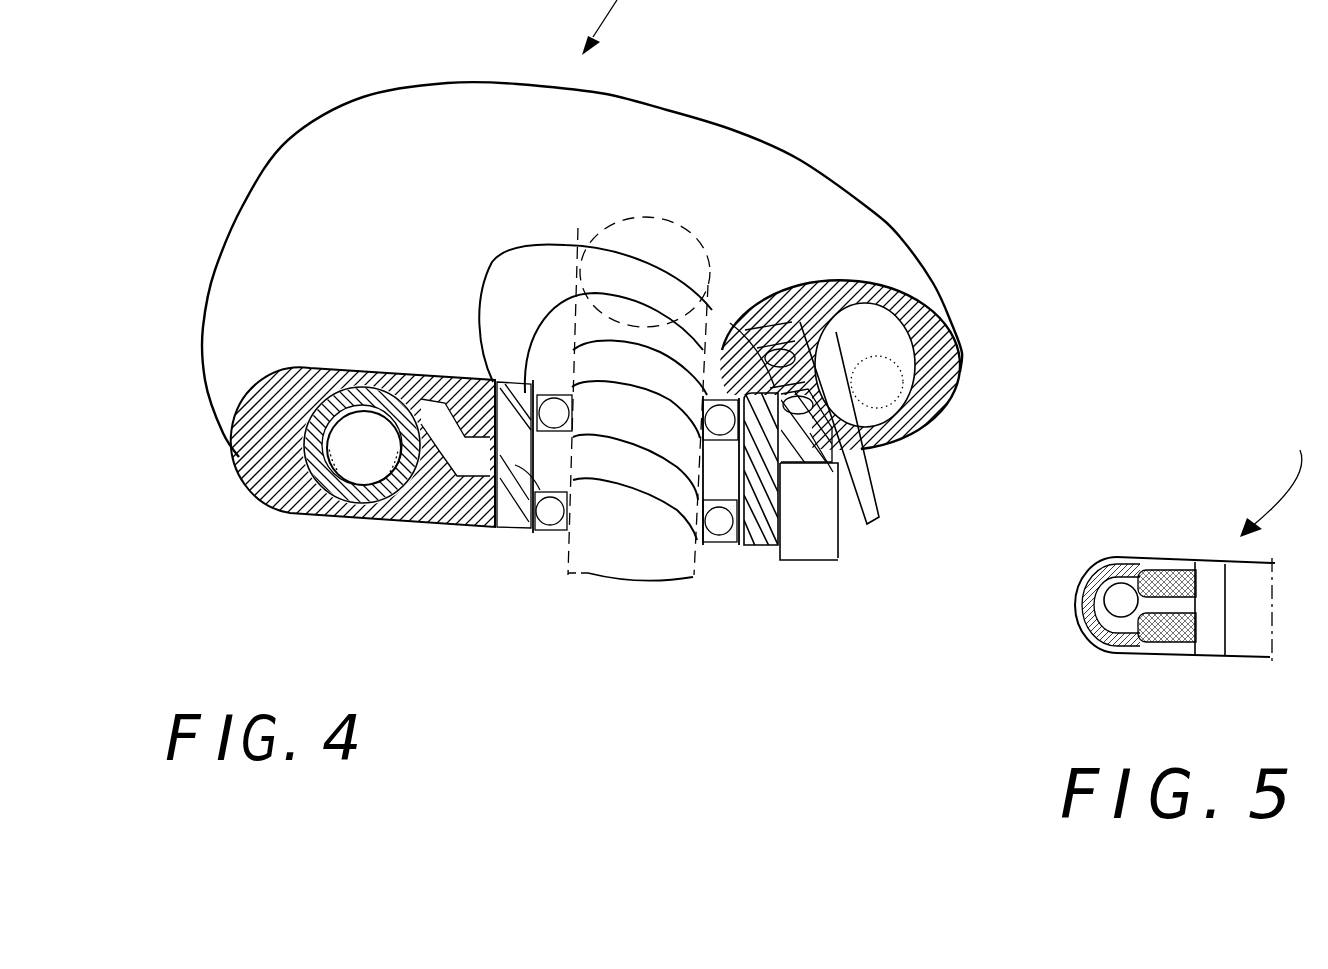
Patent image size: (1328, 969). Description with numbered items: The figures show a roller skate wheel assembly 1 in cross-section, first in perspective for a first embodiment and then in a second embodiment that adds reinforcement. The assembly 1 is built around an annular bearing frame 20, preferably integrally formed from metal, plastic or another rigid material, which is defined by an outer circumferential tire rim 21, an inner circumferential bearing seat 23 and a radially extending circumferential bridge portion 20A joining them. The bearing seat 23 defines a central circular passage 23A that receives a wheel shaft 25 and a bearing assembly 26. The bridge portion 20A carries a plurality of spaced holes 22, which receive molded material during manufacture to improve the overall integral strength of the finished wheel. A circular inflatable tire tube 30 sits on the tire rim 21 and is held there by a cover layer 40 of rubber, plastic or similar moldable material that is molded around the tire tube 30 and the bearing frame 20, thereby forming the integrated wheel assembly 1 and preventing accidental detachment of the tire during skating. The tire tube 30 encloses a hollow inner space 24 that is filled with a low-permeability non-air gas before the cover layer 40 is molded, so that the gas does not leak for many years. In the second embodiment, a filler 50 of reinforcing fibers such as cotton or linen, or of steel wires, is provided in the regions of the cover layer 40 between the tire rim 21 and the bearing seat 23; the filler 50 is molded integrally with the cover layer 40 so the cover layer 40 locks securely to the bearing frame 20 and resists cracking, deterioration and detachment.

In FIG. 5, the skate wheel assembly 1 is at (1271, 481).
In FIG. 4, the bearing frame 20 is at (750, 552).
In FIG. 4, the bridge portion 20A is at (809, 453).
In FIG. 4, the tire rim 21 is at (838, 548).
In FIG. 4, the holes 22 is at (840, 315).
In FIG. 4, the bearing seat 23 is at (573, 487).
In FIG. 4, the central circular passage 23A is at (540, 535).
In FIG. 4, the hollow inner space 24 is at (290, 512).
In FIG. 4, the wheel shaft 25 is at (657, 250).
In FIG. 4, the bearing assembly 26 is at (712, 548).
In FIG. 4, the inflatable tire tube 30 is at (368, 500).
In FIG. 4, the cover layer 40 is at (237, 457).
In FIG. 5, the filler 50 is at (1177, 568).